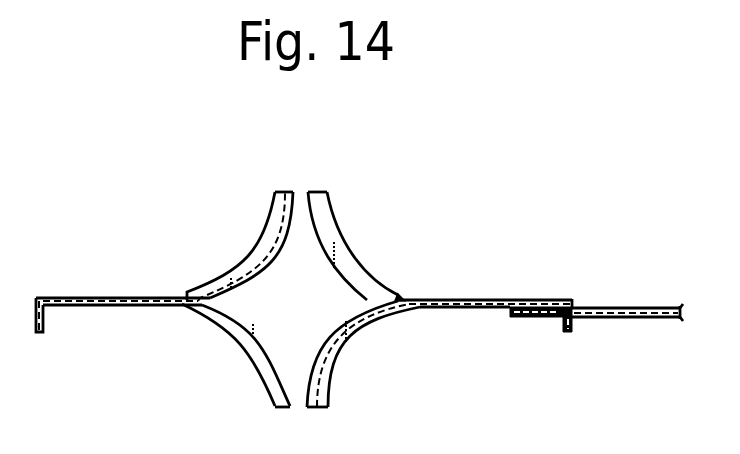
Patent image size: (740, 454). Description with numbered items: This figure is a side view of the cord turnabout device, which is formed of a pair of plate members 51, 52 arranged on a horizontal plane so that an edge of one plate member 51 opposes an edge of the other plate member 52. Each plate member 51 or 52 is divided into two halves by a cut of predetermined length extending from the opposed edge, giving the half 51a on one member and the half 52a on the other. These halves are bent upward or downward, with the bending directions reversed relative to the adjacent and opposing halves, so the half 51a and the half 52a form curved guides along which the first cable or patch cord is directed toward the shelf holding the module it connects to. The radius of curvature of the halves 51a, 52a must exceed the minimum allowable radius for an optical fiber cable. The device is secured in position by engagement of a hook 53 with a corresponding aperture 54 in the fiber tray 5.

The fiber tray 5 is at (629, 320).
The plate member 51 is at (108, 302).
The half 51a is at (268, 242).
The plate member 52 is at (483, 300).
The half 52a is at (350, 343).
The hook 53 is at (569, 333).
The aperture 54 is at (576, 303).